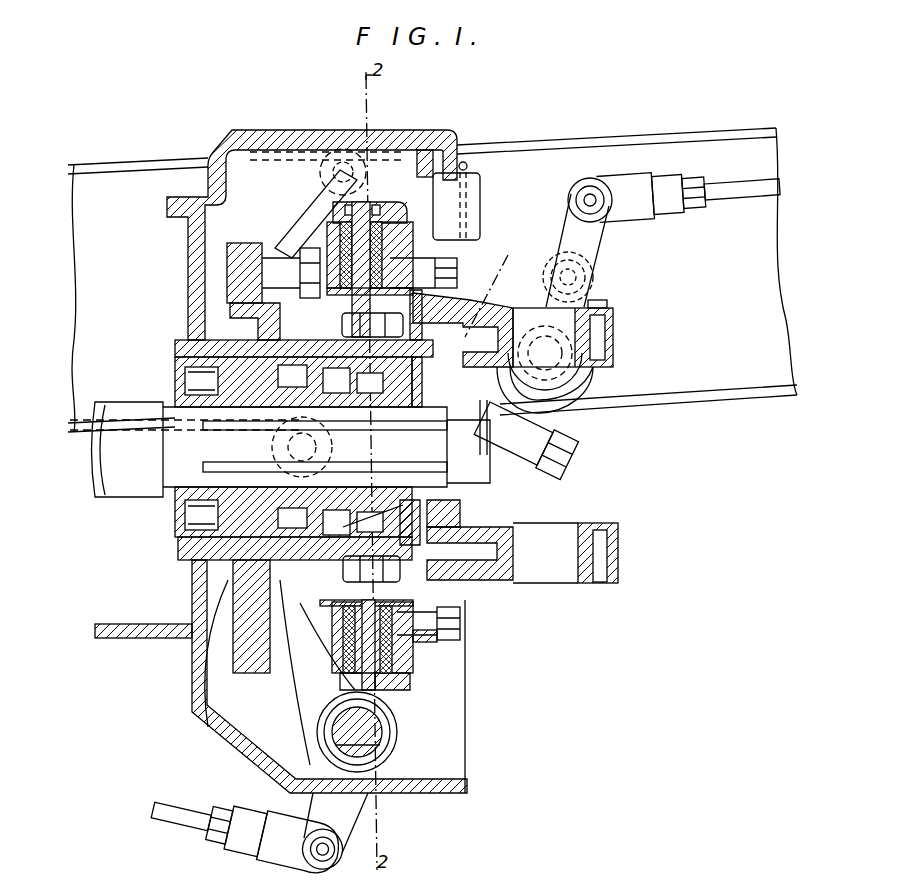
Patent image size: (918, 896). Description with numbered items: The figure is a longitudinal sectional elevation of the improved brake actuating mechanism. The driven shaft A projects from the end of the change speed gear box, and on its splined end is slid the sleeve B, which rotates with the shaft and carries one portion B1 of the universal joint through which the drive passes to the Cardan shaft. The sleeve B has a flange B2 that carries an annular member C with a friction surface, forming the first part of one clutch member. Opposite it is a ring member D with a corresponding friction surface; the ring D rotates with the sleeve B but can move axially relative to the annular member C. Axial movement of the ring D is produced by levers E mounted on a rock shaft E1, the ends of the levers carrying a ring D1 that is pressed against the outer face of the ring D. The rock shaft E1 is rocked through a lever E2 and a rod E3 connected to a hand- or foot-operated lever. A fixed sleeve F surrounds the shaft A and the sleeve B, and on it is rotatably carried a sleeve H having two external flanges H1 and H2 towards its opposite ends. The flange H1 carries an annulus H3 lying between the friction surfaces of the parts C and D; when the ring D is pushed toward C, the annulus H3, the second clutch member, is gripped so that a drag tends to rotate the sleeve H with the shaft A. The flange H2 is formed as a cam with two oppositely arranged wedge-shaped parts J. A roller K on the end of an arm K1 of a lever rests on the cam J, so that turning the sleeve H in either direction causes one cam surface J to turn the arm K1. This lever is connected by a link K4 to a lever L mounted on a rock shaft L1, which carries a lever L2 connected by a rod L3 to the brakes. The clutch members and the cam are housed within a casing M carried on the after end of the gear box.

The driven shaft A is at (188, 467).
The sleeve B is at (410, 487).
The universal joint portion B1 is at (585, 590).
The flange B2 is at (433, 638).
The annular member C is at (397, 680).
The ring member D is at (333, 647).
The ring D1 is at (190, 725).
The levers E is at (300, 612).
The rock shaft E1 is at (383, 757).
The lever E2 is at (350, 812).
The rod E3 is at (177, 817).
The fixed sleeve F is at (227, 565).
The sleeve H is at (473, 497).
The flange H1 is at (447, 597).
The flange H2 is at (307, 642).
The annulus H3 is at (407, 207).
The wedge-shaped cam parts J is at (230, 310).
The roller K is at (233, 243).
The lever arm K1 is at (287, 227).
The link K4 is at (343, 210).
The lever L is at (427, 277).
The rock shaft L1 is at (593, 377).
The lever L2 is at (593, 248).
The rod L3 is at (738, 193).
The casing M is at (250, 763).